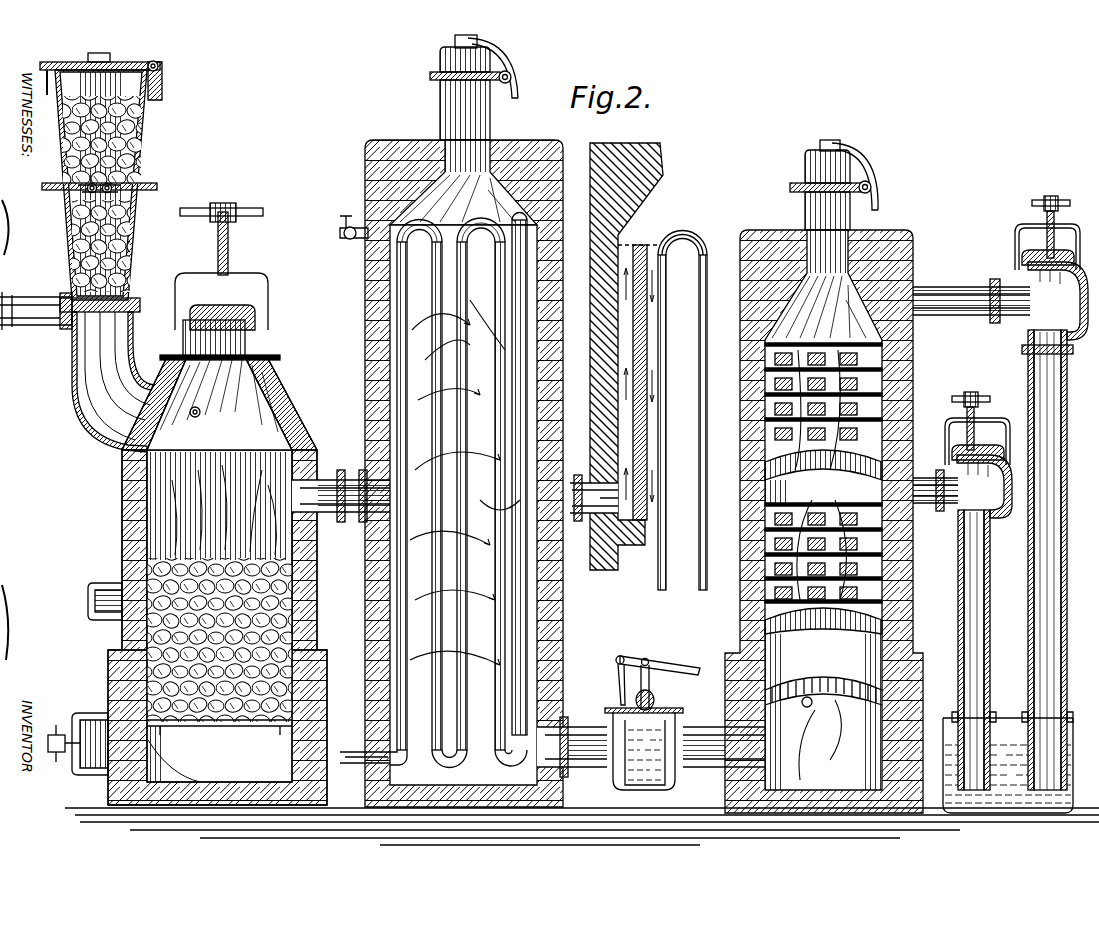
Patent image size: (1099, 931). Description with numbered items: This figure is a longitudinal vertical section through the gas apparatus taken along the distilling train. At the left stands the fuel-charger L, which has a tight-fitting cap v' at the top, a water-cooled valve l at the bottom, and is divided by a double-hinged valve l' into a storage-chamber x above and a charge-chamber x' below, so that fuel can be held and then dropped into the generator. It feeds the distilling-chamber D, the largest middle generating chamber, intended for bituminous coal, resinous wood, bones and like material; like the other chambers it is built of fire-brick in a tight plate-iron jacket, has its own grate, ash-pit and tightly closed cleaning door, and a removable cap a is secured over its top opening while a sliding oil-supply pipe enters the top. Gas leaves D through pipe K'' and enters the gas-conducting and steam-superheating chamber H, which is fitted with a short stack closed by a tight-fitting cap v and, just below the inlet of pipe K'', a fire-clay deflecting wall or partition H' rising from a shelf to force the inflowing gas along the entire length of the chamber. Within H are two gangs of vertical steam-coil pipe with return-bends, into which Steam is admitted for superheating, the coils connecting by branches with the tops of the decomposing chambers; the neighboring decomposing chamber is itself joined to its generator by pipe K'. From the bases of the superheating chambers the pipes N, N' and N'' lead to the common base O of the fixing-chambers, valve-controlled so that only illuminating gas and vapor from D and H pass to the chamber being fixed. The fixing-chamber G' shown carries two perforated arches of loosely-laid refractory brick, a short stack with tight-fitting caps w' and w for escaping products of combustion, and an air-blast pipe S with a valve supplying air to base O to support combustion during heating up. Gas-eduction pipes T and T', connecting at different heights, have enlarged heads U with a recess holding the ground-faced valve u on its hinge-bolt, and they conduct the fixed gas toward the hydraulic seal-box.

The fuel-charger L is at (72, 262).
The storage-chamber x is at (112, 140).
The charge-chamber x' is at (115, 246).
The double-hinged valve l' is at (106, 177).
The tight-fitting cap v' is at (101, 68).
The water-cooled valve l is at (36, 304).
The distilling-chamber D is at (187, 580).
The air-blast pipe S is at (105, 606).
The oil inlet oil is at (212, 398).
The removable cap a is at (221, 280).
The pipe K'' is at (341, 482).
The gas-conducting and steam-superheating chamber H is at (461, 473).
The tight-fitting cap v is at (468, 87).
The steam inlet Steam is at (344, 746).
The pipe N' is at (645, 723).
The pipe N'' is at (645, 763).
The deflecting wall or partition H' is at (640, 356).
The pipe K' is at (594, 498).
The fixing-chamber G' is at (829, 521).
The base of the fixing-chambers O is at (805, 707).
The tight-fitting cap w' is at (832, 185).
The enlarged head U is at (1030, 328).
The tight-fitting cap w is at (1012, 330).
The valve u is at (1022, 390).
The gas-eduction pipe T' is at (1036, 560).
The gas-eduction pipe T is at (960, 650).
The pipe N is at (1008, 765).